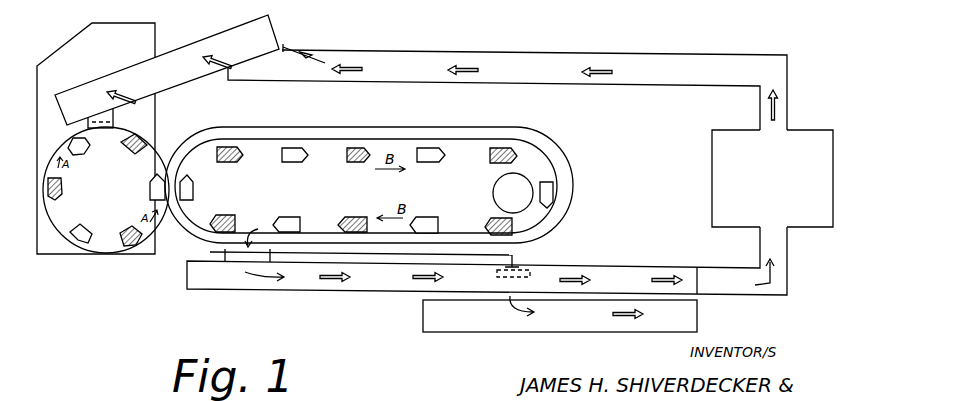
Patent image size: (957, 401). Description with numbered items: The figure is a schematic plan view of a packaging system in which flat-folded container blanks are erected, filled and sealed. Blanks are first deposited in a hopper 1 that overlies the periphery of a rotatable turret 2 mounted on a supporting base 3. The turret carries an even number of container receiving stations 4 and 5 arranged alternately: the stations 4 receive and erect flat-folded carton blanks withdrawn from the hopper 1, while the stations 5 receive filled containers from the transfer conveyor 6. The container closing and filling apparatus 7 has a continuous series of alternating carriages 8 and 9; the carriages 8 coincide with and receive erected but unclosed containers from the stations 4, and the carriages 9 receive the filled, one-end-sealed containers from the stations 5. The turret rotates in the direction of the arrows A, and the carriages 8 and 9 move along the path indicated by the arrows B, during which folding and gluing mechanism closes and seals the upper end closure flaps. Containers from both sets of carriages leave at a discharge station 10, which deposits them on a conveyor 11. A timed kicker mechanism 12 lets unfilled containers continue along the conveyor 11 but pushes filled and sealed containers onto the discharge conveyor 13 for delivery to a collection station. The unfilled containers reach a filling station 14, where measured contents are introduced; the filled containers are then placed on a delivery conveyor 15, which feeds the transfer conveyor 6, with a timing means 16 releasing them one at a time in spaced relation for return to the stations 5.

The hopper 1 is at (107, 112).
The rotatable turret 2 is at (105, 247).
The supporting base 3 is at (123, 30).
The container receiving stations 4 is at (84, 147).
The container receiving stations 5 is at (128, 150).
The transfer conveyor 6 is at (192, 72).
The container closing and filling apparatus 7 is at (369, 120).
The carriages 8 is at (192, 187).
The carriages 9 is at (229, 162).
The discharge station 10 is at (242, 256).
The conveyor 11 is at (250, 280).
The timed kicker mechanism 12 is at (517, 257).
The discharge conveyor 13 is at (562, 322).
The filling station 14 is at (780, 192).
The delivery conveyor 15 is at (533, 62).
The timing means 16 is at (295, 43).